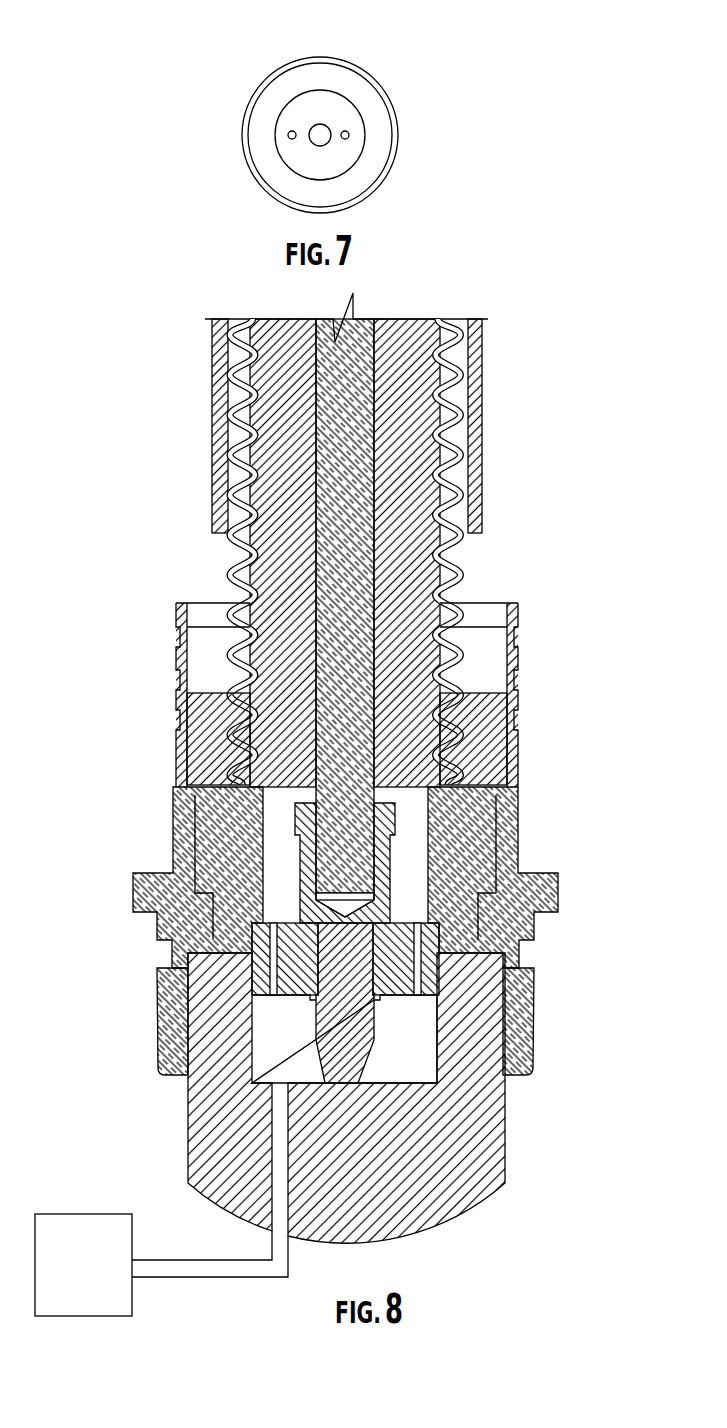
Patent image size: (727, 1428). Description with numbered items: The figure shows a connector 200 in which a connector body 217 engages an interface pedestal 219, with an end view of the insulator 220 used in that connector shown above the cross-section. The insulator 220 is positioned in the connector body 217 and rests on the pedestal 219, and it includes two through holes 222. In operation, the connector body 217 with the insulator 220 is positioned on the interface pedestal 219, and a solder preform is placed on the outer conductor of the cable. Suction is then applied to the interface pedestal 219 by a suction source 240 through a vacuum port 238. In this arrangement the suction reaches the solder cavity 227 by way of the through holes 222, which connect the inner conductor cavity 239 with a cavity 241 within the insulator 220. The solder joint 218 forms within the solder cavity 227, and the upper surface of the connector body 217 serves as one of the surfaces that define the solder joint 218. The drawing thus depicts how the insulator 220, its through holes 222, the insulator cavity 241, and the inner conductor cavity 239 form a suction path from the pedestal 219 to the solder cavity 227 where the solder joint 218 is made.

In FIG. 7, the insulator 220 is at (412, 124).
In FIG. 8, the insulator 220 is at (272, 946).
In FIG. 7, the through holes 222 is at (293, 130).
In FIG. 8, the solder cavity 227 is at (497, 655).
In FIG. 8, the solder joint 218 is at (497, 713).
In FIG. 8, the connector body 217 is at (513, 868).
In FIG. 8, the cavity 241 is at (410, 827).
In FIG. 8, the connector 200 is at (571, 930).
In FIG. 8, the inner conductor cavity 239 is at (405, 1040).
In FIG. 8, the interface pedestal 219 is at (500, 1128).
In FIG. 8, the vacuum port 238 is at (216, 1268).
In FIG. 8, the suction source 240 is at (73, 1318).